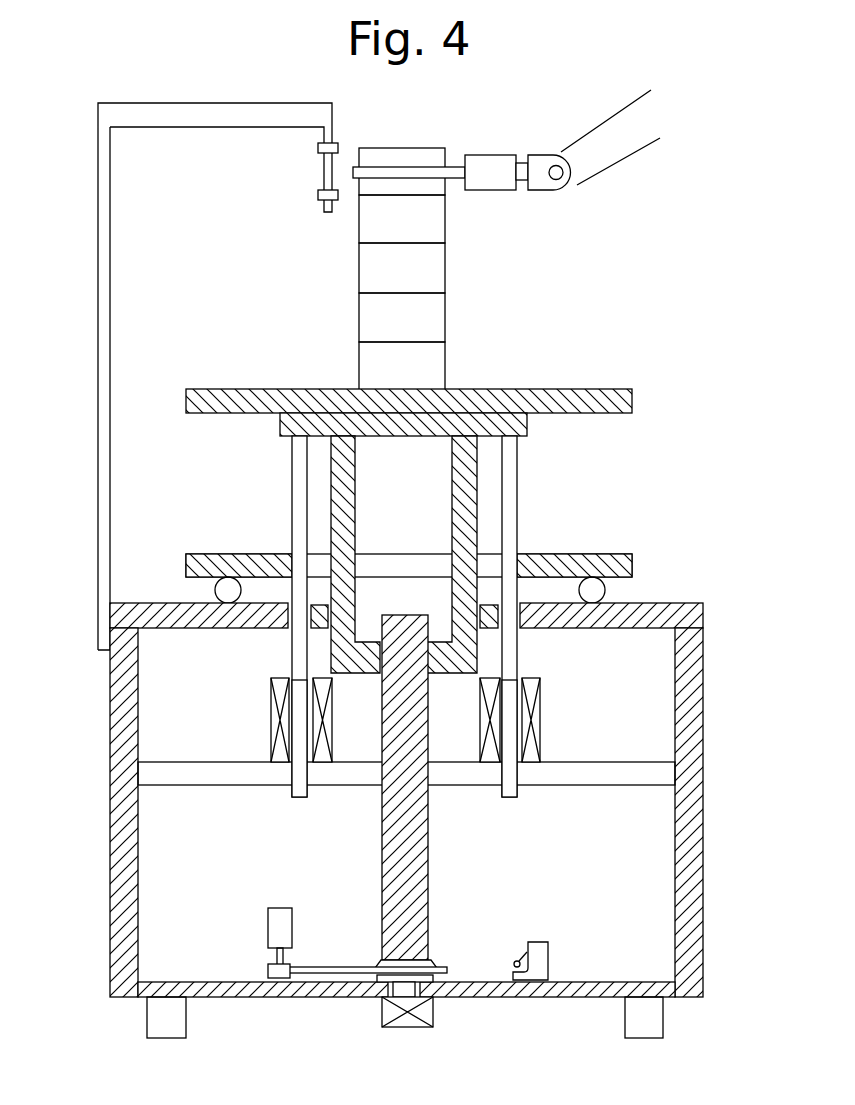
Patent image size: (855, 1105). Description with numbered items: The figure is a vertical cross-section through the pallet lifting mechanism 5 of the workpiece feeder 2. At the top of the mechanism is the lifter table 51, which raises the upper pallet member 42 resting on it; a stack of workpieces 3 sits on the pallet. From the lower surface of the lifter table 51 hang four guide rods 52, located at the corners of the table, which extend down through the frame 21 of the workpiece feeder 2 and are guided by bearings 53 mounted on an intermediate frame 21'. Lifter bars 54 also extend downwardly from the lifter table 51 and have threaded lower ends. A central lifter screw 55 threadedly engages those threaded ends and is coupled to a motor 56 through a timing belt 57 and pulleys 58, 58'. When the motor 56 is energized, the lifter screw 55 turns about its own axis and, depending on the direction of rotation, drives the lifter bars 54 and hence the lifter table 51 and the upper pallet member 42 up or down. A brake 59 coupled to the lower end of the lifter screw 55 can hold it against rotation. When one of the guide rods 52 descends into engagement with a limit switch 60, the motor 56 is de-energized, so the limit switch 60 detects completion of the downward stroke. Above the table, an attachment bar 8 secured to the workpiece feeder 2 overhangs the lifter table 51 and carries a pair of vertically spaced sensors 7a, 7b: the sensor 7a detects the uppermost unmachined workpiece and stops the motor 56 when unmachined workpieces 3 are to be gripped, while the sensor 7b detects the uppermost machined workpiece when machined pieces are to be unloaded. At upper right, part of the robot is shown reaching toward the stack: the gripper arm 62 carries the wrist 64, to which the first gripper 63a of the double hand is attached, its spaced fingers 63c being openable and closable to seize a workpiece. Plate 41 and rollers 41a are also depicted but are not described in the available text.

The workpiece feeder 2 is at (392, 833).
The workpieces 3 is at (423, 158).
The pallet lifting mechanism 5 is at (440, 605).
The sensor 7a is at (340, 147).
The sensor 7b is at (320, 198).
The attachment bar 8 is at (222, 112).
The frame 21 is at (437, 820).
The intermediate frame 21' is at (406, 811).
The plate 41 is at (613, 555).
The rollers 41a is at (220, 585).
The upper pallet member 42 is at (597, 390).
The lifter table 51 is at (525, 429).
The guide rods 52 is at (292, 497).
The bearings 53 is at (271, 714).
The lifter bars 54 is at (345, 460).
The lifter screw 55 is at (428, 893).
The motor 56 is at (282, 915).
The timing belt 57 is at (322, 967).
The pulley 58 is at (242, 952).
The pulley 58' is at (438, 956).
The brake 59 is at (382, 1012).
The limit switch 60 is at (520, 958).
The gripper arm 62 is at (625, 143).
The first gripper 63a is at (500, 168).
The fingers 63c is at (452, 178).
The wrist 64 is at (547, 190).